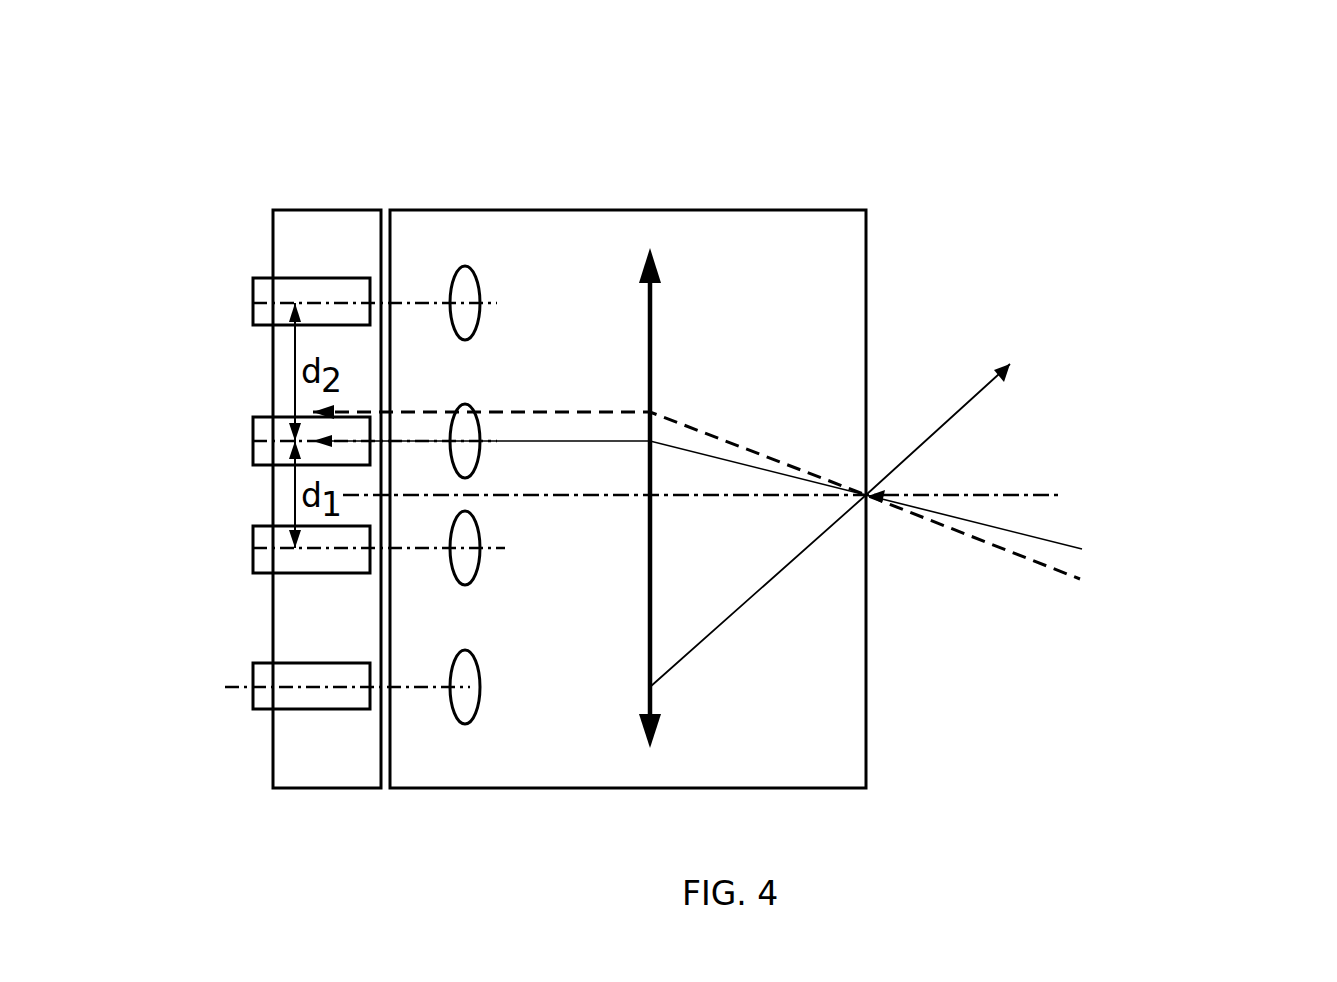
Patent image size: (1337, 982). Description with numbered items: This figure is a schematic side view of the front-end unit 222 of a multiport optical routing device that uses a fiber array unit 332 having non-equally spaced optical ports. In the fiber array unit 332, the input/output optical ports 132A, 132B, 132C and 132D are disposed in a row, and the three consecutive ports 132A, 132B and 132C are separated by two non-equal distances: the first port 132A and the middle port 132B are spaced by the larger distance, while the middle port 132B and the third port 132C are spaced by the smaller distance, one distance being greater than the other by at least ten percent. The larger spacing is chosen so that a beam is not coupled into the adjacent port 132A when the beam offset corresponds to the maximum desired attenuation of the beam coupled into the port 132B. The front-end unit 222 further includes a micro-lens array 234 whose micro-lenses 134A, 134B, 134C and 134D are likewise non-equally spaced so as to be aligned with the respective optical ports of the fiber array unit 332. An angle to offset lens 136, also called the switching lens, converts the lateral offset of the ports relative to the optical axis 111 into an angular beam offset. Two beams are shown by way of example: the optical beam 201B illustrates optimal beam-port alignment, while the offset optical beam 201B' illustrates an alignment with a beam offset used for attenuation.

The fiber array unit 332 is at (289, 144).
The micro-lens array 234 is at (606, 144).
The front-end unit 222 is at (978, 150).
The first optical port 132A is at (257, 278).
The second optical port 132B is at (254, 417).
The third optical port 132C is at (257, 573).
The fourth optical port 132D is at (258, 710).
The first micro-lens 134A is at (480, 290).
The second micro-lens 134B is at (480, 425).
The third micro-lens 134C is at (478, 574).
The fourth micro-lens 134D is at (478, 713).
The angle to offset lens 136 is at (664, 280).
The optical axis 111 is at (768, 497).
The optical beam 201B is at (723, 525).
The offset optical beam 201B' is at (696, 543).